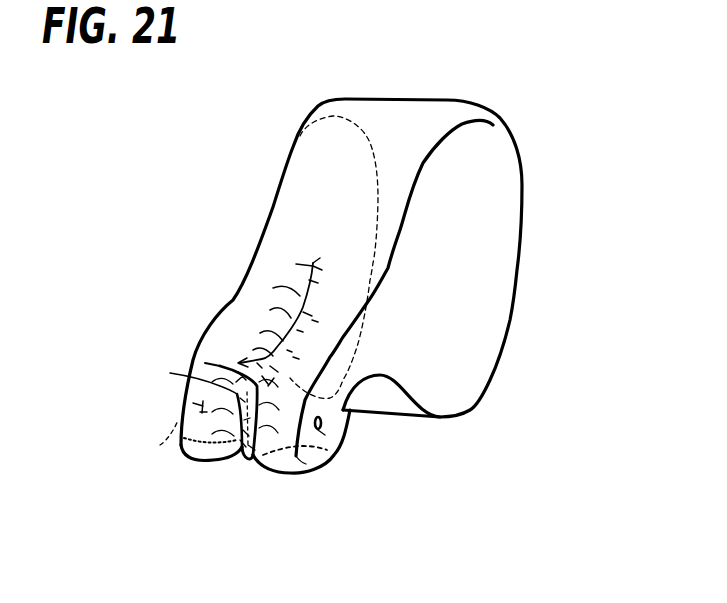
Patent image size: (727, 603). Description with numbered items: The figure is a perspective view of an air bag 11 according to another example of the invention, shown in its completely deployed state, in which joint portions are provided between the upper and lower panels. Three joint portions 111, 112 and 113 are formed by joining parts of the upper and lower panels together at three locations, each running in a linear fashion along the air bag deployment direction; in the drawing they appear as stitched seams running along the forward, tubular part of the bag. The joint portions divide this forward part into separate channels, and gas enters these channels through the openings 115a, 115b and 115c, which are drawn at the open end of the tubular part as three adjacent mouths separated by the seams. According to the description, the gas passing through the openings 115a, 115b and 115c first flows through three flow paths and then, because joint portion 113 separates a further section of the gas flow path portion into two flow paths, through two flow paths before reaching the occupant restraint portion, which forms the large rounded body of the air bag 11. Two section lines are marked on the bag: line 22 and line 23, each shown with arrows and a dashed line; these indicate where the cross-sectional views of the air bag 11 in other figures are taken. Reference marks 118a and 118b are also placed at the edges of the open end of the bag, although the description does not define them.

The air bag 11 is at (568, 185).
The line 22 is at (178, 379).
The line 23 is at (200, 286).
The joint portion 111 is at (205, 363).
The joint portion 112 is at (240, 364).
The joint portion 113 is at (303, 275).
The opening 115a is at (196, 460).
The opening 115b is at (247, 460).
The opening 115c is at (310, 463).
The first opening edge 118a is at (160, 445).
The second opening edge 118b is at (325, 435).